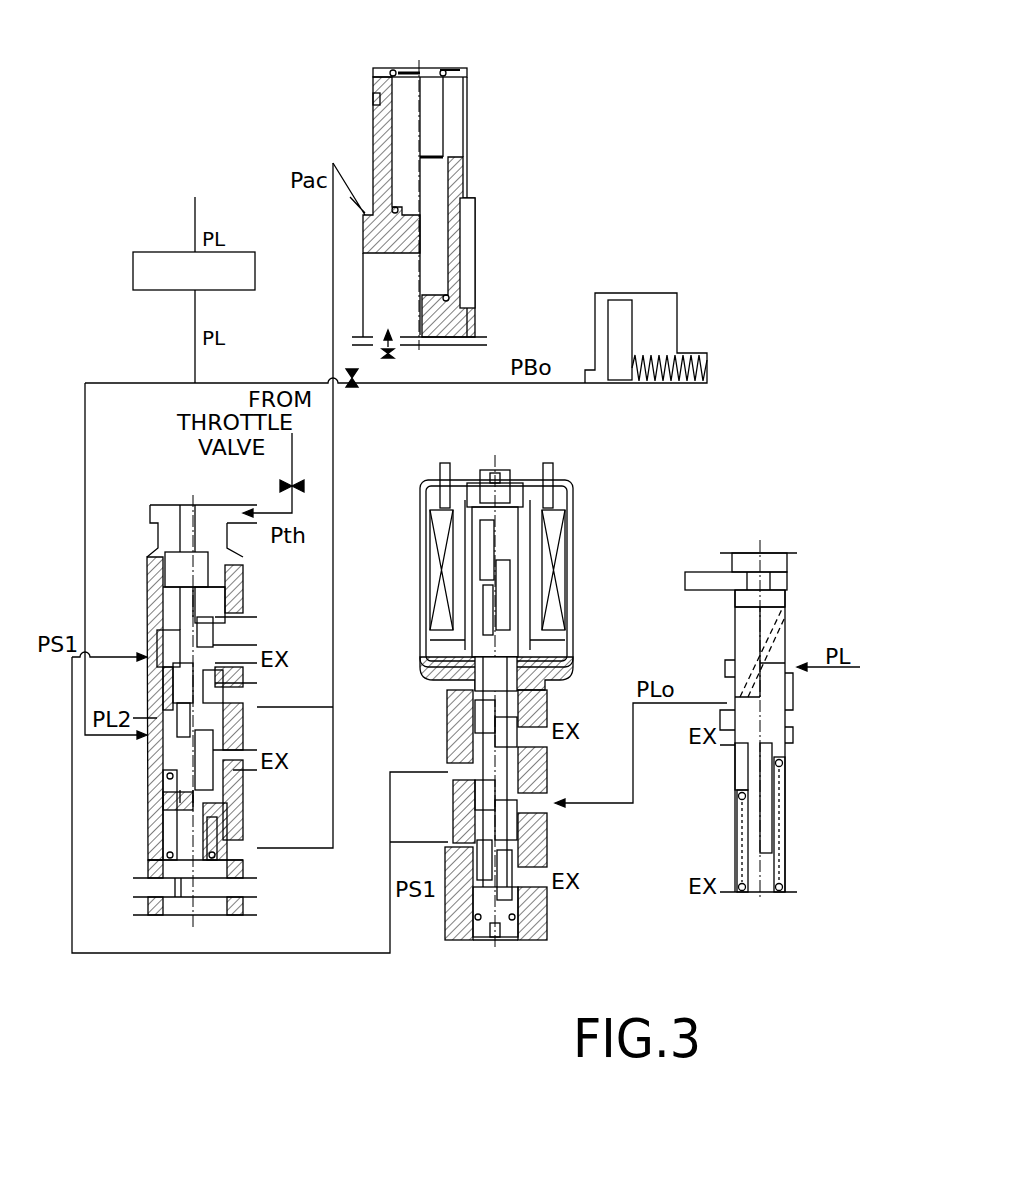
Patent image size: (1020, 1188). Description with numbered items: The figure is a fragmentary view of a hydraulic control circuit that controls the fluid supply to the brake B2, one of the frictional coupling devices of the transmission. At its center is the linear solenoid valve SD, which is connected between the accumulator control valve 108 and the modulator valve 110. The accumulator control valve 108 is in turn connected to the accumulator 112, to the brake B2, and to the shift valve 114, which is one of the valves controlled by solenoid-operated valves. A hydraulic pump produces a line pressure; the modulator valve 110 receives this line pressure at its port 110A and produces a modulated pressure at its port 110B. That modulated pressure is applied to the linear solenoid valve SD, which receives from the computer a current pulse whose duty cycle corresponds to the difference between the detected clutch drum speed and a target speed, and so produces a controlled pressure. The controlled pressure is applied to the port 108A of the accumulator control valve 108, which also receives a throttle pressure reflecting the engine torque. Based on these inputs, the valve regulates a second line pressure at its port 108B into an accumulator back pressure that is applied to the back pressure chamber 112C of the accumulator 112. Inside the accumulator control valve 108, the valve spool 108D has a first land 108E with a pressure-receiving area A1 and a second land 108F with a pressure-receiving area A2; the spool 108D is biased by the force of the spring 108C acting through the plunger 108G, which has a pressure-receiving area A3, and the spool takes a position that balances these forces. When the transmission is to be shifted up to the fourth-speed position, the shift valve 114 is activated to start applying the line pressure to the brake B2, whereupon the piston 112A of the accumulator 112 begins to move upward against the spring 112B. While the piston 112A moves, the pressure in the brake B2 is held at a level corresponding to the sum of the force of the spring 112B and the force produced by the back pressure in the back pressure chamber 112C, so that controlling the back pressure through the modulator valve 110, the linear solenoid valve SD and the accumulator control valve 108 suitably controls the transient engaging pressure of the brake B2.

The accumulator control valve 108 is at (229, 687).
The port 108A is at (145, 647).
The port 108B is at (143, 752).
The spring 108C is at (228, 823).
The valve spool 108D is at (200, 692).
The first land 108E is at (215, 598).
The second land 108F is at (208, 637).
The plunger 108G is at (228, 795).
The pressure-receiving area A1 is at (157, 593).
The pressure-receiving area A2 is at (213, 637).
The pressure-receiving area A3 is at (233, 782).
The modulator valve 110 is at (750, 693).
The port 110A is at (788, 657).
The port 110B is at (730, 693).
The accumulator 112 is at (425, 182).
The piston 112A is at (462, 232).
The spring 112B is at (447, 76).
The back pressure chamber 112C is at (366, 192).
The shift valve 114 is at (253, 278).
The brake B2 is at (690, 303).
The linear solenoid valve SD is at (402, 475).